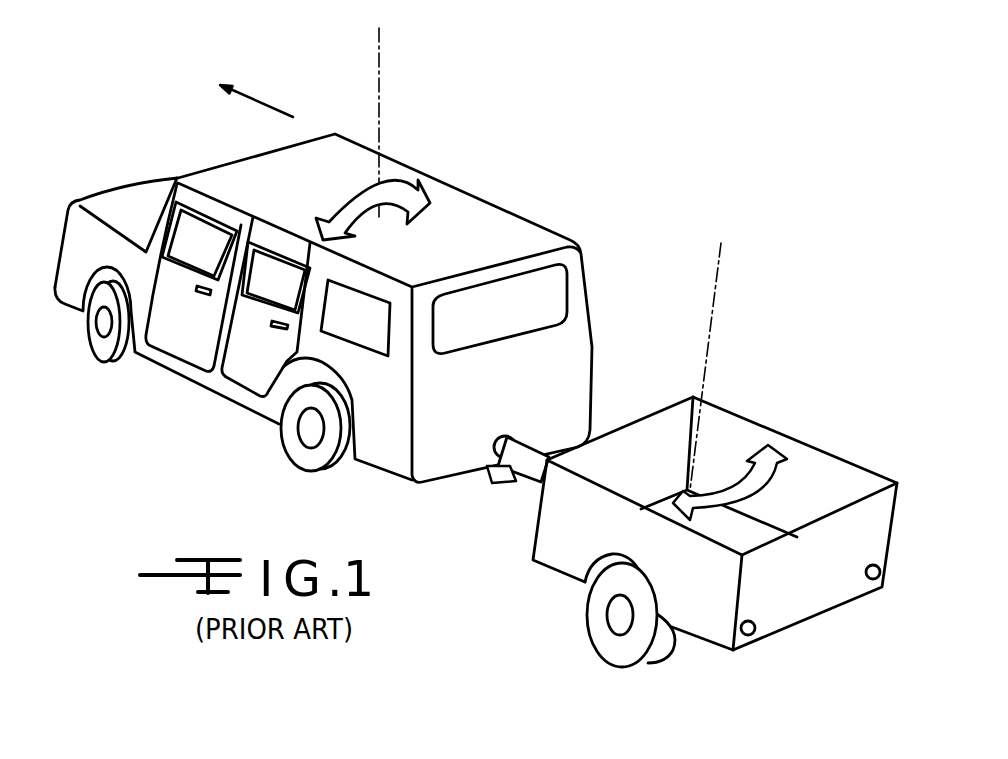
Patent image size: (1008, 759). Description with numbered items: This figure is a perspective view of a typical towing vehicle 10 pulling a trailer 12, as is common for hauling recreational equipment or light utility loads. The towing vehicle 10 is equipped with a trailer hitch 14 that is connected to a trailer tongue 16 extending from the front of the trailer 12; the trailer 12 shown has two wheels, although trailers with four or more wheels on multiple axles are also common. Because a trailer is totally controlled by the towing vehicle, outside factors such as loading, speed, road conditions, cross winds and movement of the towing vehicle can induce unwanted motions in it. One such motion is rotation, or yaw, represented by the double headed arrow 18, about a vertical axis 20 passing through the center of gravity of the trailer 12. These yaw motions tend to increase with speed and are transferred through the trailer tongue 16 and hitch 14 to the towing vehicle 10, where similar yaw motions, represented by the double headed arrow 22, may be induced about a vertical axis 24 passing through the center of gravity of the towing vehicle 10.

The vehicle 10 is at (506, 221).
The trailer 12 is at (740, 413).
The trailer hitch 14 is at (489, 471).
The trailer tongue 16 is at (508, 440).
The double headed arrow 18 is at (762, 484).
The vertical axis 20 is at (713, 328).
The double headed arrow 22 is at (343, 210).
The vertical axis 24 is at (380, 71).